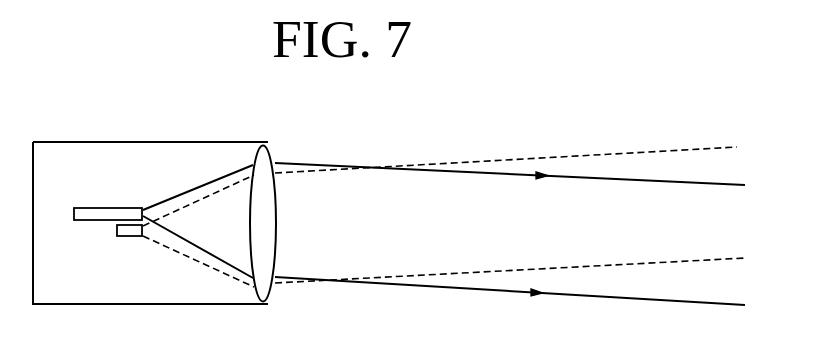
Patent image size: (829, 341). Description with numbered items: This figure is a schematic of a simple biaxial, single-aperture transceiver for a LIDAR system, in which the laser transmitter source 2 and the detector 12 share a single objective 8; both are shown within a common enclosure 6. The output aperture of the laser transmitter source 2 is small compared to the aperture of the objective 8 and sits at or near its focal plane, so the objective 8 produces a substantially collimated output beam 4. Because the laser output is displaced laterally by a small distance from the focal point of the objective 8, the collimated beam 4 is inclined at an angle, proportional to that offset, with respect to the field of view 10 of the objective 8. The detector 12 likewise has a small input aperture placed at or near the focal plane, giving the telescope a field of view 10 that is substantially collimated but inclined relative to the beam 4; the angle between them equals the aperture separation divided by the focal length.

The laser transmitter source 2 is at (107, 200).
The collimated output beam 4 is at (701, 231).
The housing 6 is at (202, 141).
The objective 8 is at (263, 238).
The field of view 10 is at (730, 177).
The detector 12 is at (128, 242).